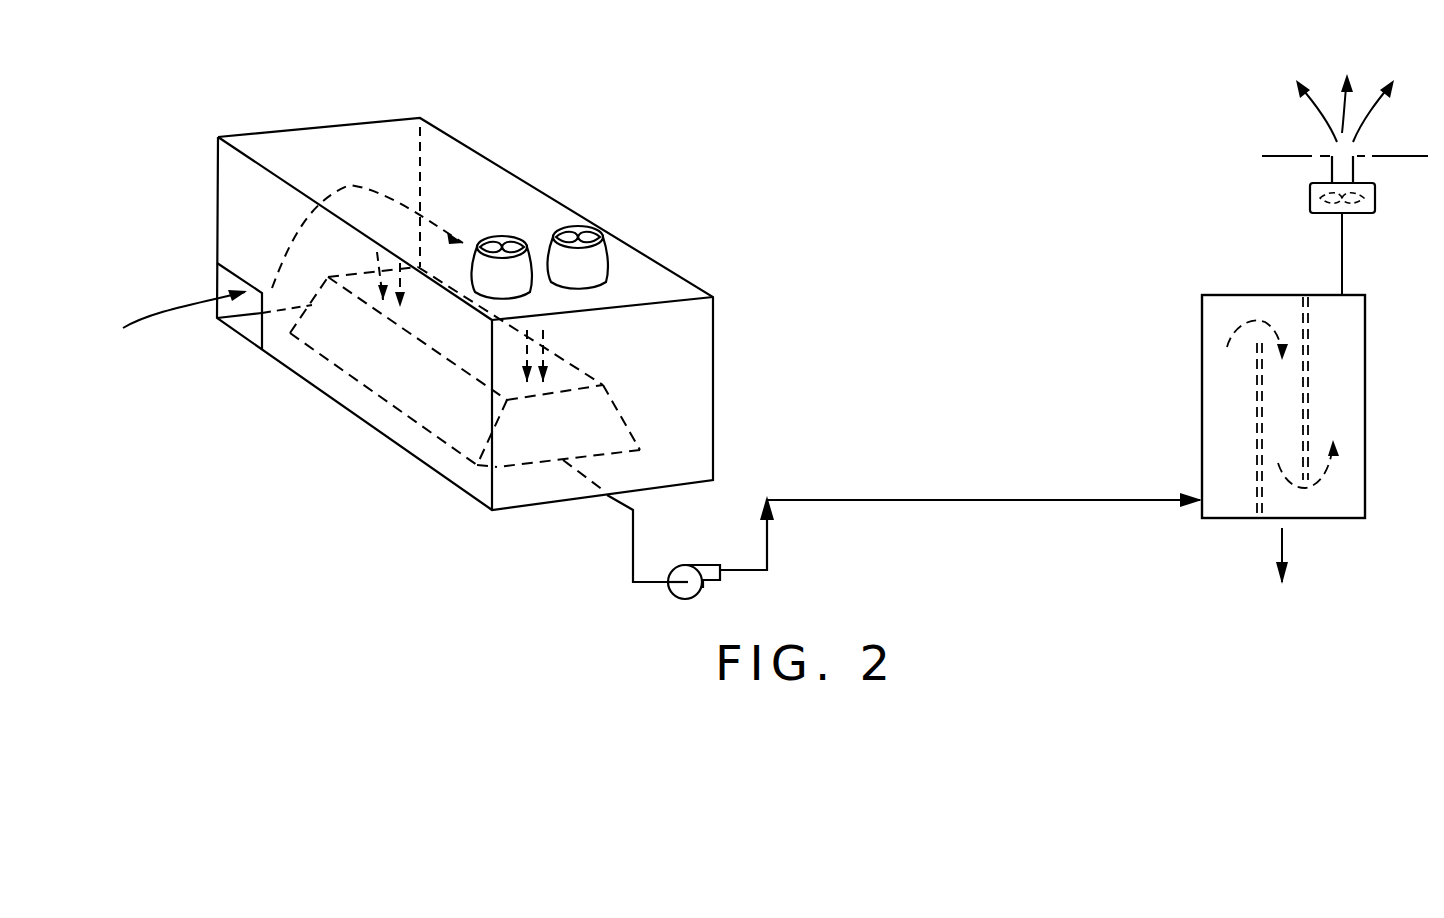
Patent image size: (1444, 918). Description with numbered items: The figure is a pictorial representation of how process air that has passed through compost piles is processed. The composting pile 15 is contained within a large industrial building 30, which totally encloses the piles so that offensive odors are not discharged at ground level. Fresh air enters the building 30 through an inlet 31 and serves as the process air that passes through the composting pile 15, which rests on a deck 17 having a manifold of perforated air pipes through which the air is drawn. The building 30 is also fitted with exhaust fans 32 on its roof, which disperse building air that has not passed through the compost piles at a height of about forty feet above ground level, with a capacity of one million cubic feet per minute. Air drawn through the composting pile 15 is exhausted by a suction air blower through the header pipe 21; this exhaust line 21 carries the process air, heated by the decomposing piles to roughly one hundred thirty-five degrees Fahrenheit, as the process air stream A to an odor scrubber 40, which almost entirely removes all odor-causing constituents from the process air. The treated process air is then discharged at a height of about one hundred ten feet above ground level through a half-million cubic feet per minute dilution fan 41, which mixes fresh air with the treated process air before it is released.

The composting pile 15 is at (413, 397).
The deck 17 is at (647, 475).
The header pipe 21 is at (767, 540).
The industrial building 30 is at (695, 387).
The inlet 31 is at (246, 328).
The exhaust fans 32 is at (500, 235).
The odor scrubber 40 is at (1198, 390).
The dilution fan 41 is at (1312, 200).
The air stream A is at (1050, 498).